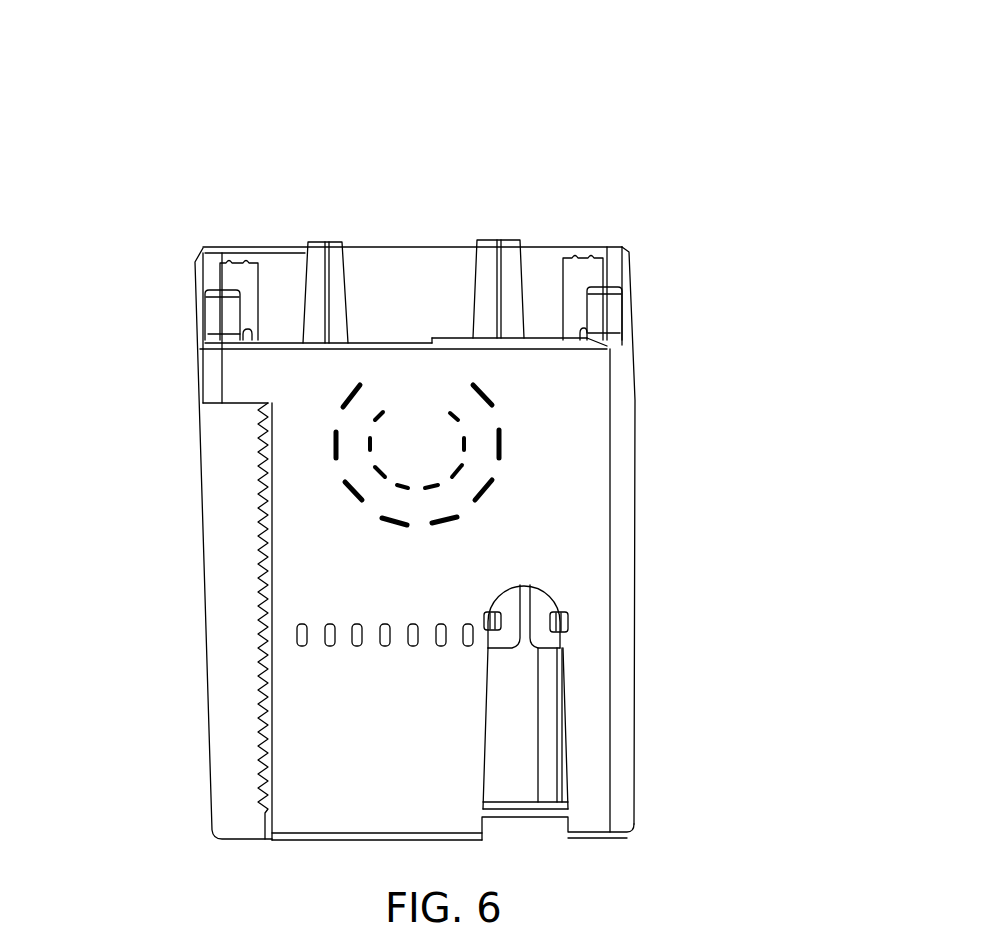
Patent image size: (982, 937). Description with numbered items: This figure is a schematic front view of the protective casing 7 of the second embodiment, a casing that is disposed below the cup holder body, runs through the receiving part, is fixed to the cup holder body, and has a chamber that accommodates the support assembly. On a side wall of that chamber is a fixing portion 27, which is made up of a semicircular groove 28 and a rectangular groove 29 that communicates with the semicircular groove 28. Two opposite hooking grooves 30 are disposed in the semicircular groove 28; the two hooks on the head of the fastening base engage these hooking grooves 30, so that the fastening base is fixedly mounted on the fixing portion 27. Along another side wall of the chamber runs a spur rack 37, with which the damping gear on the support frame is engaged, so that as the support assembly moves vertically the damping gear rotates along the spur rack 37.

The protective casing 7 is at (410, 247).
The fixing portion 27 is at (692, 696).
The semicircular groove 28 is at (528, 621).
The rectangular groove 29 is at (608, 742).
The hooking grooves 30 is at (572, 628).
The spur rack 37 is at (255, 587).